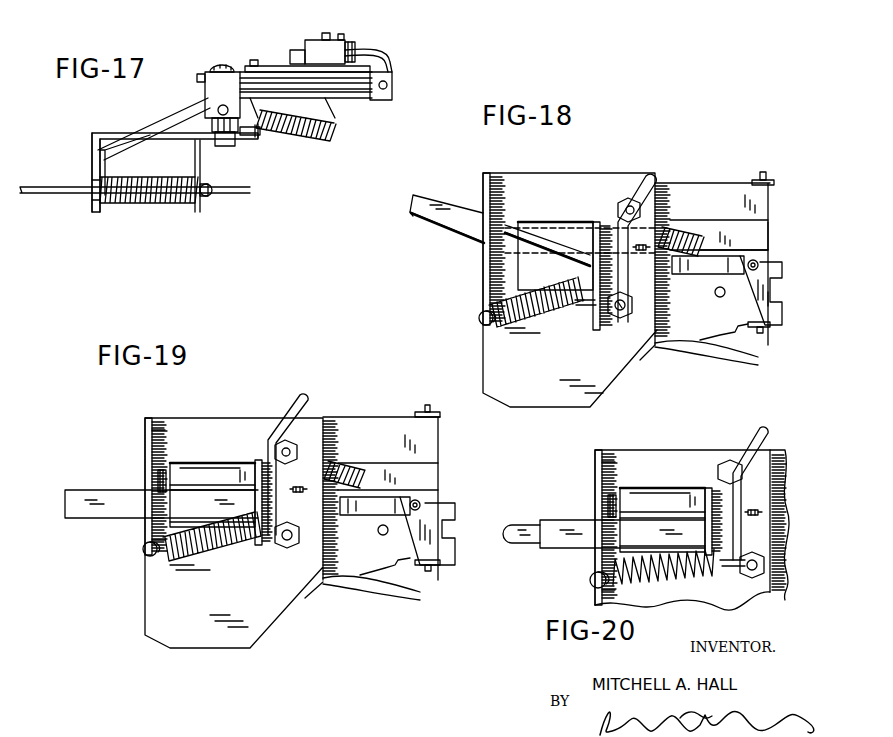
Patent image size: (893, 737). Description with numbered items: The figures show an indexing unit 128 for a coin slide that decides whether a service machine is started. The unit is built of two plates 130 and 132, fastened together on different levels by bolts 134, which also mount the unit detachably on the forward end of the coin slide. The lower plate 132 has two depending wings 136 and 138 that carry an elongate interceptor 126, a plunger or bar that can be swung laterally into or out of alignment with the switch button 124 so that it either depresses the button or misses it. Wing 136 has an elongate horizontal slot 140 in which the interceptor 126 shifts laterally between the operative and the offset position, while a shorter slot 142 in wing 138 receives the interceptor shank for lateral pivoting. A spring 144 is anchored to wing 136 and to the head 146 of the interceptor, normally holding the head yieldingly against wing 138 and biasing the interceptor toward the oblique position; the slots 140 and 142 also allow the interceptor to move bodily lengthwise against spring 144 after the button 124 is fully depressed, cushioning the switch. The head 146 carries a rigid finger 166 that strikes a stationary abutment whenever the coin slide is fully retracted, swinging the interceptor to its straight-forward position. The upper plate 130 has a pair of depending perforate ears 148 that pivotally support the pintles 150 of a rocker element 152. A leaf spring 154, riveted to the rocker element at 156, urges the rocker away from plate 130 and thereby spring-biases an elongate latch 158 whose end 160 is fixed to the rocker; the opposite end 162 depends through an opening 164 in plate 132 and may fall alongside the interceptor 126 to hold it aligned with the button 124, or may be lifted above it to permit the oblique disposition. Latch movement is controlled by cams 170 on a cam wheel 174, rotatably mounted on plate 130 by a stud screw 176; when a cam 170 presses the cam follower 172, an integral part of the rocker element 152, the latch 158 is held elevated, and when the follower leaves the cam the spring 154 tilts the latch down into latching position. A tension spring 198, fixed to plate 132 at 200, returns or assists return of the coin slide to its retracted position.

In FIG. 20, the switch button 124 is at (521, 545).
In FIG. 17, the interceptor 126 is at (25, 194).
In FIG. 18, the interceptor 126 is at (422, 216).
In FIG. 19, the interceptor 126 is at (86, 516).
In FIG. 20, the interceptor 126 is at (550, 549).
In FIG. 17, the indexing unit 128 is at (201, 70).
In FIG. 18, the indexing unit 128 is at (702, 180).
In FIG. 19, the indexing unit 128 is at (345, 415).
In FIG. 20, the indexing unit 128 is at (781, 464).
In FIG. 17, the upper plate 130 is at (348, 92).
In FIG. 18, the upper plate 130 is at (694, 345).
In FIG. 19, the upper plate 130 is at (362, 579).
In FIG. 17, the plate 132 is at (105, 133).
In FIG. 18, the plate 132 is at (607, 367).
In FIG. 19, the plate 132 is at (230, 428).
In FIG. 20, the plate 132 is at (720, 468).
In FIG. 17, the bolts 134 is at (222, 66).
In FIG. 18, the bolts 134 is at (628, 203).
In FIG. 19, the bolts 134 is at (290, 440).
In FIG. 20, the bolts 134 is at (741, 519).
In FIG. 17, the wing 136 is at (95, 213).
In FIG. 18, the wing 136 is at (490, 178).
In FIG. 19, the wing 136 is at (148, 420).
In FIG. 20, the wing 136 is at (600, 452).
In FIG. 17, the wing 138 is at (199, 206).
In FIG. 18, the wing 138 is at (598, 225).
In FIG. 19, the wing 138 is at (262, 470).
In FIG. 20, the wing 138 is at (710, 500).
In FIG. 17, the horizontal slot 140 is at (92, 185).
In FIG. 18, the horizontal slot 140 is at (483, 185).
In FIG. 19, the horizontal slot 140 is at (145, 432).
In FIG. 20, the horizontal slot 140 is at (595, 468).
In FIG. 17, the slot 142 is at (206, 184).
In FIG. 19, the slot 142 is at (232, 460).
In FIG. 20, the slot 142 is at (692, 490).
In FIG. 17, the spring 144 is at (128, 205).
In FIG. 18, the spring 144 is at (535, 320).
In FIG. 19, the spring 144 is at (170, 556).
In FIG. 20, the spring 144 is at (680, 580).
In FIG. 18, the head 146 is at (612, 258).
In FIG. 19, the head 146 is at (270, 512).
In FIG. 20, the head 146 is at (760, 558).
In FIG. 17, the perforate ears 148 is at (393, 90).
In FIG. 18, the perforate ears 148 is at (773, 184).
In FIG. 19, the perforate ears 148 is at (440, 417).
In FIG. 17, the pintles 150 is at (393, 80).
In FIG. 18, the pintles 150 is at (763, 172).
In FIG. 19, the pintles 150 is at (425, 405).
In FIG. 17, the rocker element 152 is at (346, 88).
In FIG. 18, the rocker element 152 is at (768, 210).
In FIG. 19, the rocker element 152 is at (430, 450).
In FIG. 18, the leaf spring 154 is at (745, 265).
In FIG. 19, the leaf spring 154 is at (425, 497).
In FIG. 18, the rivet 156 is at (759, 267).
In FIG. 19, the rivet 156 is at (421, 504).
In FIG. 17, the latch 158 is at (148, 150).
In FIG. 18, the latch 158 is at (705, 222).
In FIG. 19, the latch 158 is at (200, 475).
In FIG. 20, the latch 158 is at (660, 505).
In FIG. 17, the latch end 160 is at (355, 88).
In FIG. 18, the latch end 160 is at (768, 235).
In FIG. 19, the latch end 160 is at (430, 473).
In FIG. 17, the latch end 162 is at (96, 160).
In FIG. 18, the latch end 162 is at (483, 245).
In FIG. 19, the latch end 162 is at (157, 480).
In FIG. 20, the latch end 162 is at (608, 505).
In FIG. 18, the opening 164 is at (540, 222).
In FIG. 19, the opening 164 is at (175, 462).
In FIG. 20, the opening 164 is at (640, 488).
In FIG. 18, the rigid finger 166 is at (655, 175).
In FIG. 19, the rigid finger 166 is at (293, 410).
In FIG. 20, the rigid finger 166 is at (765, 428).
In FIG. 17, the cams 170 is at (300, 50).
In FIG. 17, the cam follower 172 is at (380, 50).
In FIG. 18, the cam follower 172 is at (783, 290).
In FIG. 19, the cam follower 172 is at (452, 530).
In FIG. 17, the cam wheel 174 is at (392, 58).
In FIG. 17, the stud screw 176 is at (325, 33).
In FIG. 17, the tension spring 198 is at (330, 136).
In FIG. 18, the tension spring 198 is at (690, 222).
In FIG. 19, the tension spring 198 is at (355, 465).
In FIG. 17, the spring anchor 200 is at (252, 136).
In FIG. 18, the spring anchor 200 is at (642, 245).
In FIG. 20, the spring anchor 200 is at (760, 513).